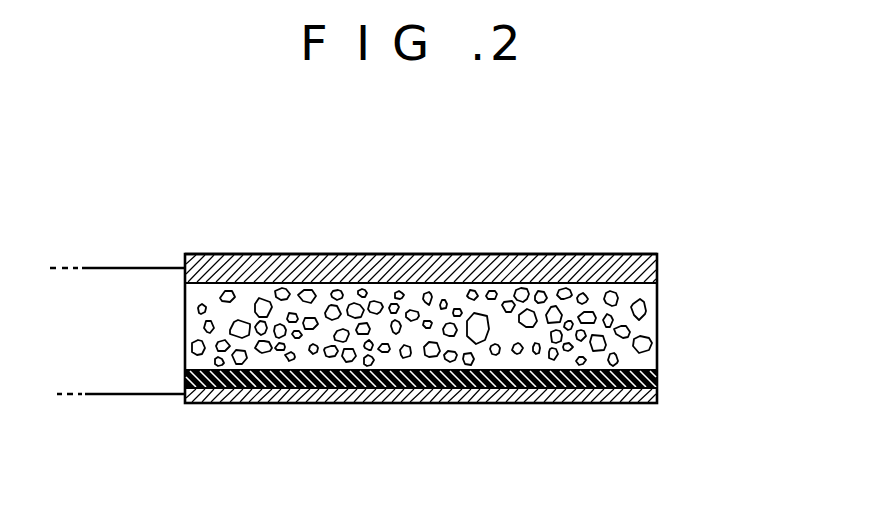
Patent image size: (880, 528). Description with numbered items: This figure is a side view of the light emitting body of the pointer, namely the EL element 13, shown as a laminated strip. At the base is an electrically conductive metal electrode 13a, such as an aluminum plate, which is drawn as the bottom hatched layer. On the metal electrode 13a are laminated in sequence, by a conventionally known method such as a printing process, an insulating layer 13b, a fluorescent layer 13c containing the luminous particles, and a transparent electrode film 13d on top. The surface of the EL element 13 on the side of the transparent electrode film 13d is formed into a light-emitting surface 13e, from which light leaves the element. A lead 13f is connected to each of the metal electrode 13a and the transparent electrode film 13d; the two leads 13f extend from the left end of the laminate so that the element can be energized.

The EL element 13 is at (452, 250).
The metal electrode 13a is at (630, 395).
The insulating layer 13b is at (660, 378).
The fluorescent layer 13c is at (645, 310).
The transparent electrode film 13d is at (660, 272).
The light-emitting surface 13e is at (578, 254).
The lead 13f is at (122, 268).